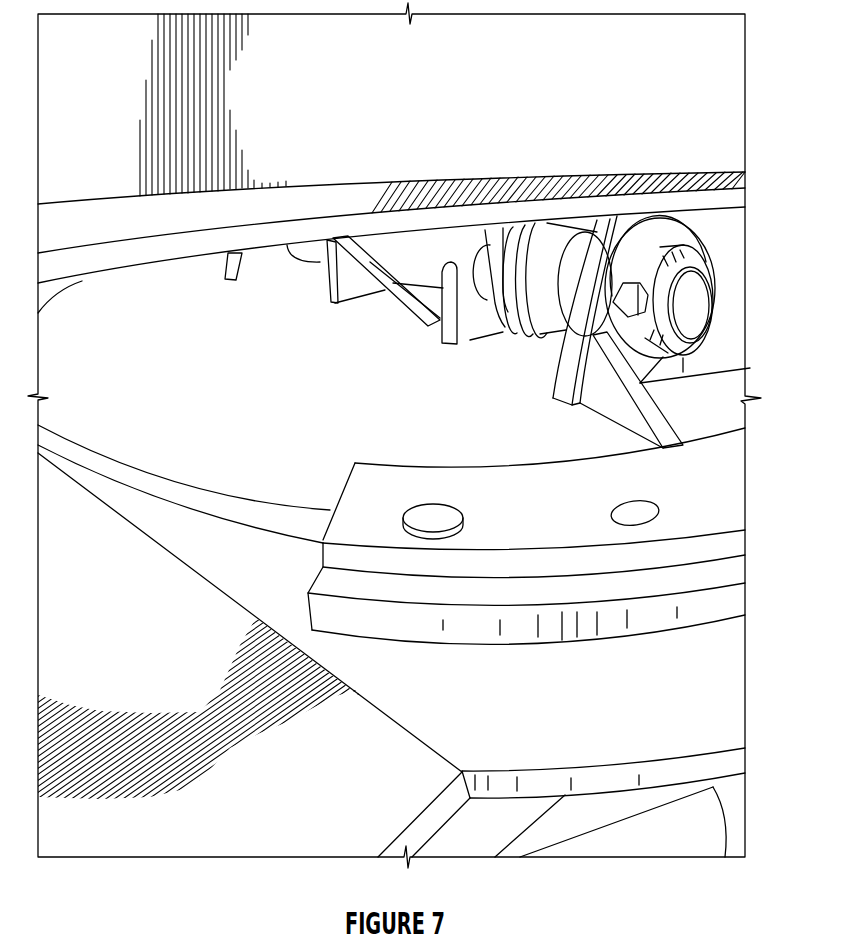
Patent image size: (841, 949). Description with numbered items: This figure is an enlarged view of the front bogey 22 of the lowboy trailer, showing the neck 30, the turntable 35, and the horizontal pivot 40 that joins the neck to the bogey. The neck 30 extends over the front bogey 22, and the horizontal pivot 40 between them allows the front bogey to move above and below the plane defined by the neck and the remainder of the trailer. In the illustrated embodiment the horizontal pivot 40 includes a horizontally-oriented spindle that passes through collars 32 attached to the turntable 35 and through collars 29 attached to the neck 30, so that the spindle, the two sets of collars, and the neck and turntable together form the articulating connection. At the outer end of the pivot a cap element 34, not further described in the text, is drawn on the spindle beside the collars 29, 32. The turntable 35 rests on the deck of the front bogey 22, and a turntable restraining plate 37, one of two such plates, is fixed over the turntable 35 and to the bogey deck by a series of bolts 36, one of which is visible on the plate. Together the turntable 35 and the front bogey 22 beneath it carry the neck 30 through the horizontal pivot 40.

The front bogey 22 is at (318, 803).
The collars attached to the neck 29 is at (497, 303).
The neck 30 is at (425, 129).
The collars attached to the turntable 32 is at (275, 258).
The hub front face / cap 34 is at (700, 302).
The turntable 35 is at (238, 420).
The bolts 36 is at (430, 512).
The turntable restraining plate 37 is at (499, 528).
The horizontal pivot 40 is at (728, 286).